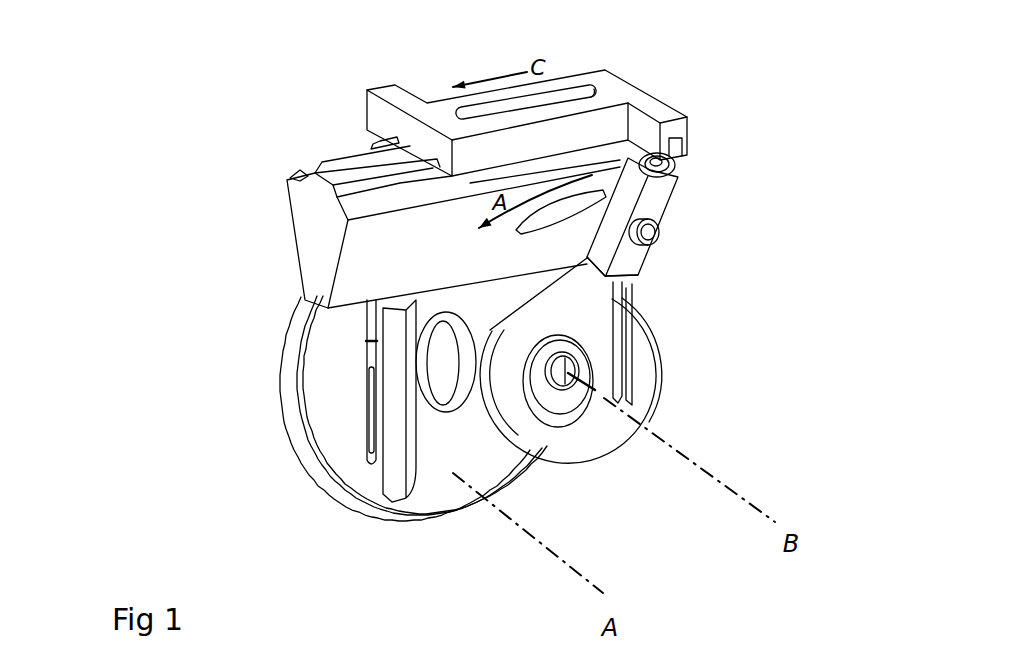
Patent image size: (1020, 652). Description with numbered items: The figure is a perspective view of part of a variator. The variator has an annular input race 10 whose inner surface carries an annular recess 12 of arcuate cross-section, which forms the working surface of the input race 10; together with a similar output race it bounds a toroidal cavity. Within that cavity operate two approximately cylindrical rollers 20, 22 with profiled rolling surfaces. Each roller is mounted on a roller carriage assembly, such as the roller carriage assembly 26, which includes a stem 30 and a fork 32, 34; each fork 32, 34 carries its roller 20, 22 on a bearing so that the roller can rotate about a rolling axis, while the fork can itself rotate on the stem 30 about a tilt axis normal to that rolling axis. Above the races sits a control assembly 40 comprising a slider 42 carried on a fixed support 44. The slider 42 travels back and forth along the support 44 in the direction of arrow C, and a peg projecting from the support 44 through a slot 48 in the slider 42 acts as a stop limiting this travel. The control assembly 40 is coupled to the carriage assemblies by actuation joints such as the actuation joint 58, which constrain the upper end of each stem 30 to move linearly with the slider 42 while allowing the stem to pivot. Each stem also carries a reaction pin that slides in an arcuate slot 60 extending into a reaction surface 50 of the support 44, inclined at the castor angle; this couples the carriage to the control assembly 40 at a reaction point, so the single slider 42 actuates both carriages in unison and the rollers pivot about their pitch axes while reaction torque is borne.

The input race 10 is at (292, 448).
The annular recess 12 is at (347, 452).
The roller 20 is at (407, 490).
The roller 22 is at (582, 462).
The roller carriage assembly 26 is at (660, 280).
The stem 30 is at (678, 178).
The fork 32 is at (365, 357).
The fork 34 is at (617, 338).
The control assembly 40 is at (342, 143).
The slider 42 is at (640, 90).
The support 44 is at (295, 222).
The slot 48 is at (603, 73).
The reaction surface 50 is at (437, 266).
The actuation joint 58 is at (694, 163).
The arcuate slot 60 is at (580, 228).